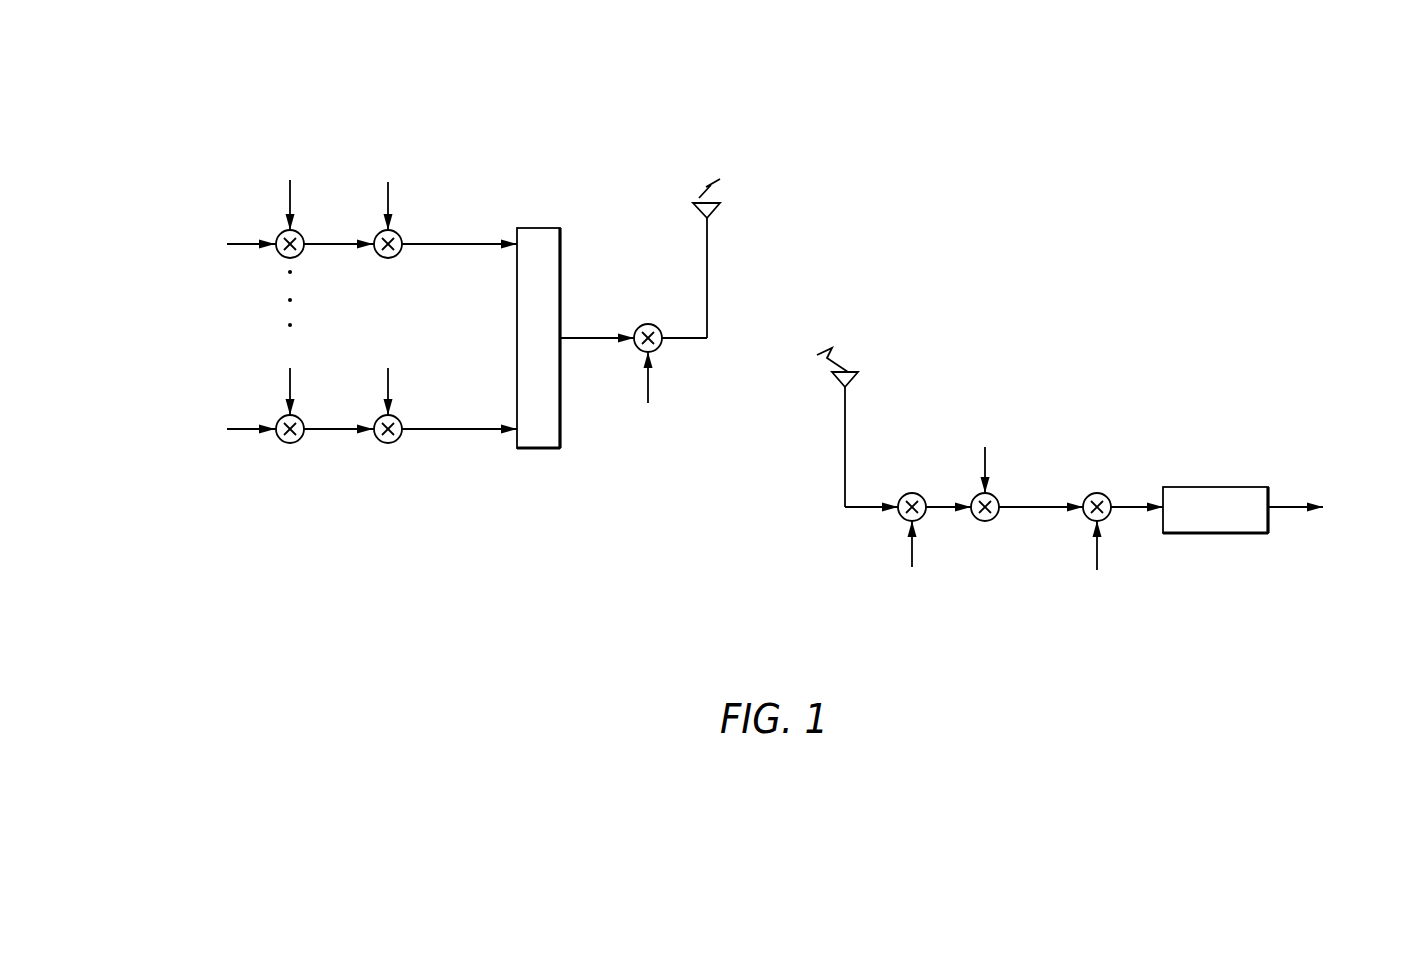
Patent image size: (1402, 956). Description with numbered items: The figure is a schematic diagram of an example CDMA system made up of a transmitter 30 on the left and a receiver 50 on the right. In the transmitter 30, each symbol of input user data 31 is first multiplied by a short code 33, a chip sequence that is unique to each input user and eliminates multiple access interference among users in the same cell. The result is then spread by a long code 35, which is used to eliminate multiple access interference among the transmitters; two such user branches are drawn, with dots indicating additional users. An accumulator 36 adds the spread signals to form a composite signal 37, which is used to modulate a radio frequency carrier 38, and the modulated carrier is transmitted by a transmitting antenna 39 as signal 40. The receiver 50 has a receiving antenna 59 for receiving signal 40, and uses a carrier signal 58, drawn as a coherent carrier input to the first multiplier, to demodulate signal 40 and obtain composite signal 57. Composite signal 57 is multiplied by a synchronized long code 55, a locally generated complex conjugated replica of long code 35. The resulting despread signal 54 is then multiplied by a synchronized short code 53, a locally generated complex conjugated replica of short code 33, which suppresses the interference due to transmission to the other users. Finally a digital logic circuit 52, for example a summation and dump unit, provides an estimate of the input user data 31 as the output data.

The transmitter 30 is at (440, 512).
The input user data 31 is at (189, 216).
The short code 33 is at (291, 150).
The long code 35 is at (395, 131).
The accumulator 36 is at (537, 227).
The composite signal 37 is at (589, 334).
The radio frequency carrier 38 is at (643, 452).
The transmitting antenna 39 is at (690, 203).
The signal 40 is at (721, 182).
The receiver 50 is at (1092, 387).
The digital logic circuit 52 is at (1213, 487).
The short code 53 is at (1095, 598).
The despread signal 54 is at (1037, 506).
The long code 55 is at (988, 420).
The composite signal 57 is at (937, 506).
The carrier signal 58 is at (903, 620).
The receiving antenna 59 is at (861, 375).